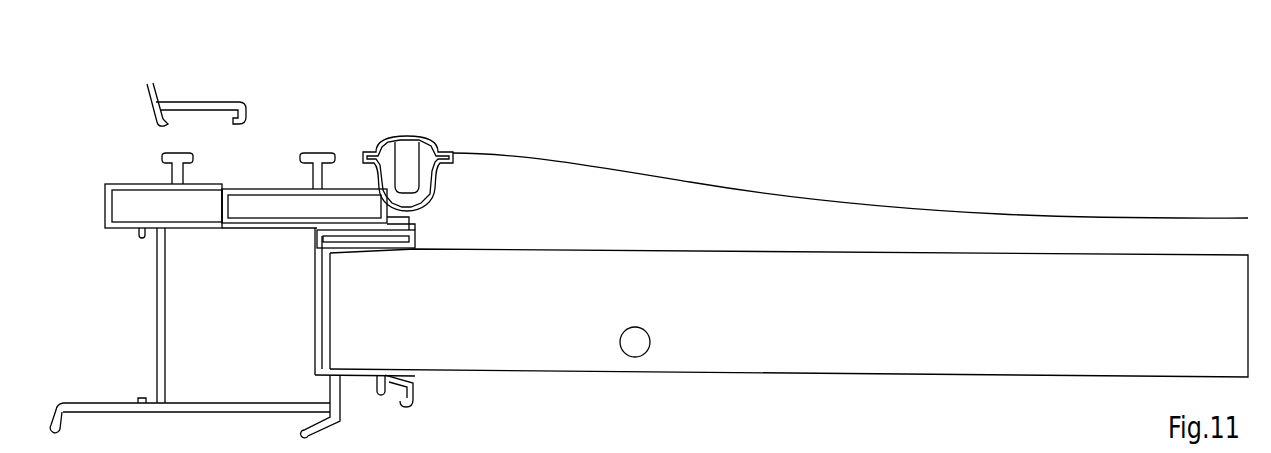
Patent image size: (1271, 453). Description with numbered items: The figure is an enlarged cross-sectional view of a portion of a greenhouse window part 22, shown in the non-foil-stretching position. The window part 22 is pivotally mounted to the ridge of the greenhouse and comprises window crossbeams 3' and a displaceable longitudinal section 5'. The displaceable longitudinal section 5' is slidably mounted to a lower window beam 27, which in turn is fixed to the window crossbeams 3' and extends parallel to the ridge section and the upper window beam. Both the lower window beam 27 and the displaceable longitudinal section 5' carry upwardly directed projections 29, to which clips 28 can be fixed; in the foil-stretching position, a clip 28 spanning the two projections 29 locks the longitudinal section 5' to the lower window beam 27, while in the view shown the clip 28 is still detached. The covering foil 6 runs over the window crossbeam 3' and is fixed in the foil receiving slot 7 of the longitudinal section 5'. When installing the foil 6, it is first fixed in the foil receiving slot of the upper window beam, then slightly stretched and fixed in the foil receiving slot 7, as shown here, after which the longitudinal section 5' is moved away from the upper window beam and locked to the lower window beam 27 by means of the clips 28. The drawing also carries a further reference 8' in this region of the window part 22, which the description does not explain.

The window crossbeam 3' is at (789, 327).
The displaceable longitudinal section 5' is at (304, 144).
The foil 6 is at (688, 182).
The foil receiving slot 7 is at (406, 183).
The guide rail 8' is at (358, 251).
The window part 22 is at (850, 142).
The lower window beam 27 is at (245, 412).
The clip 28 is at (150, 82).
The upwardly directed projection 29 is at (160, 157).